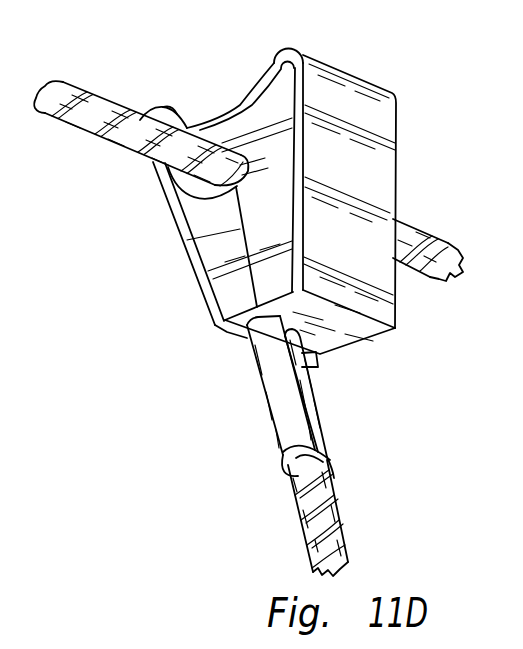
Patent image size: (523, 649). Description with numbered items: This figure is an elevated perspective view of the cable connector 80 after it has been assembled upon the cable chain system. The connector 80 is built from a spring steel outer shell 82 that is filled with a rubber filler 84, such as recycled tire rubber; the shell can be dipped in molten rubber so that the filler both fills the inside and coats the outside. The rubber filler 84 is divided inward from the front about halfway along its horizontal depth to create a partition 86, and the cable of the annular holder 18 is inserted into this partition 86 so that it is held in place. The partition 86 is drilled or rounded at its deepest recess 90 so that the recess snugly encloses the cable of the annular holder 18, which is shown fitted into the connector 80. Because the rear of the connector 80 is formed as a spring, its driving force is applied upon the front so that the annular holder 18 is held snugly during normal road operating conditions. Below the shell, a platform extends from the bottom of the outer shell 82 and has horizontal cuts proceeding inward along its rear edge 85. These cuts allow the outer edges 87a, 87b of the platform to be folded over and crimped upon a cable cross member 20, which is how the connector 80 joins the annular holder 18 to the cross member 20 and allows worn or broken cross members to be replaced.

The annular holder 18 is at (90, 128).
The cable cross member 20 is at (328, 504).
The cable connector 80 is at (331, 32).
The spring steel outer shell 82 is at (393, 148).
The rubber filler 84 is at (256, 120).
The rear edge 85 is at (240, 338).
The partition 86 is at (193, 243).
The outer edge of platform 87a is at (310, 379).
The outer edge of platform 87b is at (280, 375).
The deepest recess 90 is at (163, 186).